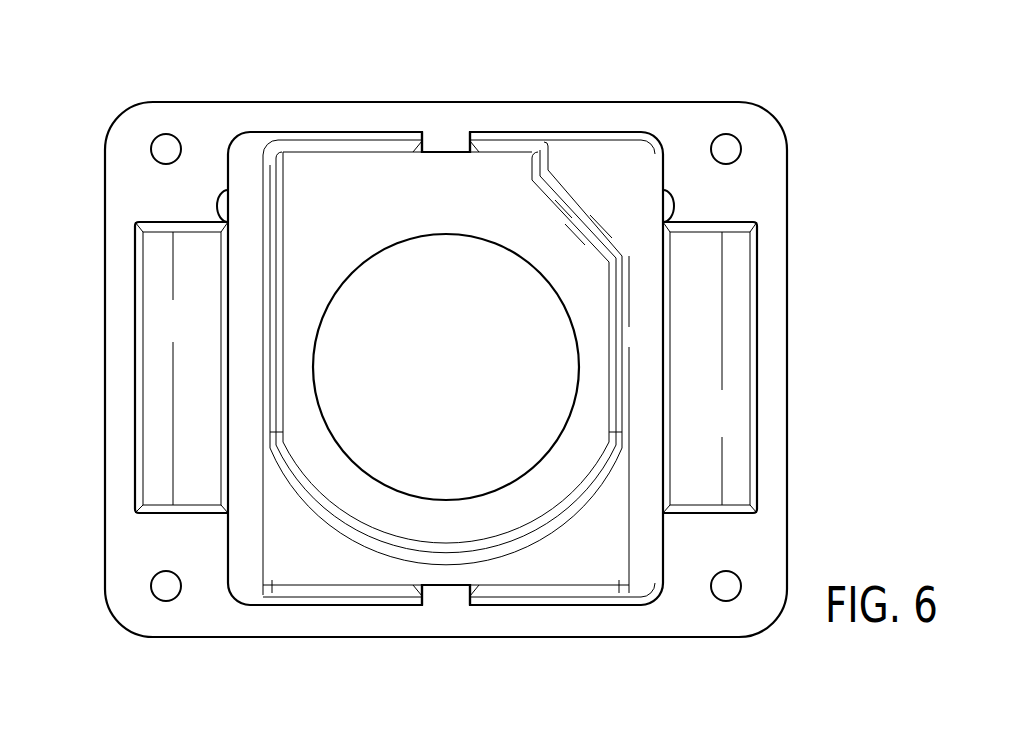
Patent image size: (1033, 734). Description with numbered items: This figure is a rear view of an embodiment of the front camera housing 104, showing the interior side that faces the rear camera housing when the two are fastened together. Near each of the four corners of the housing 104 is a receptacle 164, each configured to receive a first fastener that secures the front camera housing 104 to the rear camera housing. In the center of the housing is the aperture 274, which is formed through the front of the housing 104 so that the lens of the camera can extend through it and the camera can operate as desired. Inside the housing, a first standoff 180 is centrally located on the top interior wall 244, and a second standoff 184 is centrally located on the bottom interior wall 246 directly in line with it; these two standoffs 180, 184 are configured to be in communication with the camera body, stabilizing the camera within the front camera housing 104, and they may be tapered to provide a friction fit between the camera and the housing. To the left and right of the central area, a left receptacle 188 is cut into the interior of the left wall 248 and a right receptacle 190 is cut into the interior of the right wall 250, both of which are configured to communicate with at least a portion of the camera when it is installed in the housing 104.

The front camera housing 104 is at (723, 103).
The receptacle 164 is at (155, 134).
The first standoff 180 is at (441, 151).
The second standoff 184 is at (443, 586).
The left receptacle 188 is at (732, 331).
The right receptacle 190 is at (155, 378).
The top interior wall 244 is at (502, 137).
The bottom interior wall 246 is at (533, 606).
The left wall 248 is at (663, 194).
The right wall 250 is at (228, 195).
The aperture 274 is at (543, 387).